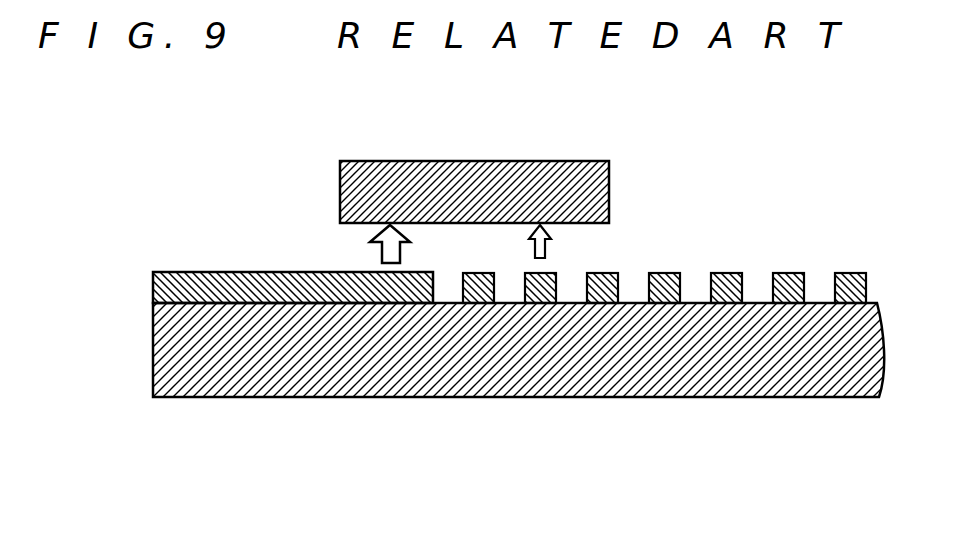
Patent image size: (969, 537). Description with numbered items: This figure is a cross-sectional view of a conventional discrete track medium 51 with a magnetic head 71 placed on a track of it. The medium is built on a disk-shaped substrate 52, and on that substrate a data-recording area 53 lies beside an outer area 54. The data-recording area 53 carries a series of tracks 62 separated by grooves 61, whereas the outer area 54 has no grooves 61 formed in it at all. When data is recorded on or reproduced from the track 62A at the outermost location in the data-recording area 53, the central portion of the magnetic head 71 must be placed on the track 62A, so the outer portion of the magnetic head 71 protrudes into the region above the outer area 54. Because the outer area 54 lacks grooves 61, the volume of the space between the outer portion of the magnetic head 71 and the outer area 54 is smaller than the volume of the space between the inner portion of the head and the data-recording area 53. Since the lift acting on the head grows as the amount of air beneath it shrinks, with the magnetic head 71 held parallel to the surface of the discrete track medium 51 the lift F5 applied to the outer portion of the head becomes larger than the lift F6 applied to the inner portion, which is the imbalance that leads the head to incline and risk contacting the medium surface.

The discrete track medium 51 is at (541, 370).
The disk-shaped substrate 52 is at (863, 349).
The data-recording area 53 is at (913, 409).
The outer area 54 is at (433, 409).
The grooves 61 is at (637, 289).
The tracks 62 is at (665, 273).
The track at the outermost location 62A is at (470, 273).
The magnetic head 71 is at (609, 180).
The lift applied to the outer portion of the magnetic head F5 is at (376, 245).
The lift applied to the inner portion of the magnetic head F6 is at (533, 250).